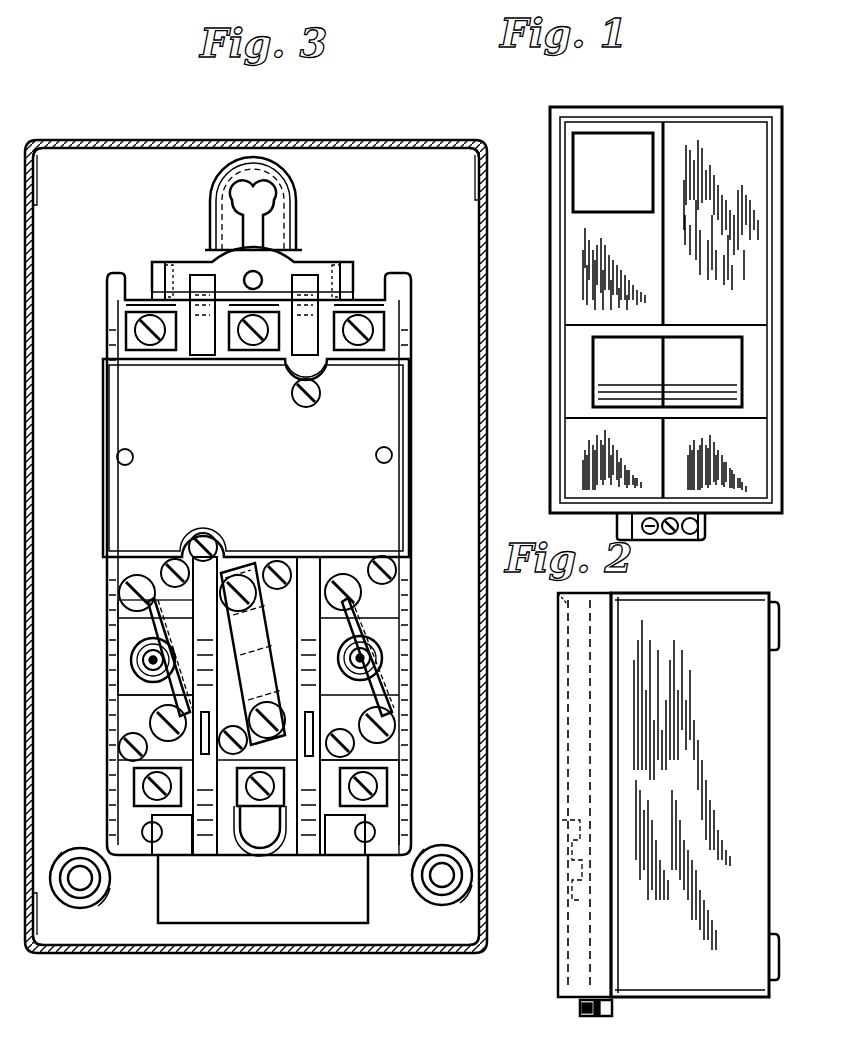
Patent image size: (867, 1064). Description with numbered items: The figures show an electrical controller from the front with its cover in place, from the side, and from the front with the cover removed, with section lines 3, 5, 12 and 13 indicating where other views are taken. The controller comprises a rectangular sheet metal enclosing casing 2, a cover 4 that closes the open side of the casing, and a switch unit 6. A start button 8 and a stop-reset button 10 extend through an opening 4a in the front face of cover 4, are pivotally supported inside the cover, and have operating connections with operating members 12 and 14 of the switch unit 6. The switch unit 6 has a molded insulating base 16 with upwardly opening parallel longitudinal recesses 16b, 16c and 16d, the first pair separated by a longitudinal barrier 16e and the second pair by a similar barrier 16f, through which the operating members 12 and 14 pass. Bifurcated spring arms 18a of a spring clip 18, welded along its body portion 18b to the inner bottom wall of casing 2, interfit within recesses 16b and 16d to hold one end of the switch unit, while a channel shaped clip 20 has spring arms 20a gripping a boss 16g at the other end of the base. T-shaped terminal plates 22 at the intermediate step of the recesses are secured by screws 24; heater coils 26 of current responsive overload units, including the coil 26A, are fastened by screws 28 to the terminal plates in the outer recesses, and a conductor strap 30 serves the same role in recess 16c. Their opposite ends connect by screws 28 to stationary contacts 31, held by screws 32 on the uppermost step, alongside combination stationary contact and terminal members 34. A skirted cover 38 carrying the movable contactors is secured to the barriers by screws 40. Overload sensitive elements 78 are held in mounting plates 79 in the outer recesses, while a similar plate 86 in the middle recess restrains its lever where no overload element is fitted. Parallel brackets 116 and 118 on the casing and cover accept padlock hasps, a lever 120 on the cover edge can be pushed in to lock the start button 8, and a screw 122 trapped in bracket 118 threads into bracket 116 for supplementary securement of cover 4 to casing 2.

In FIG. 3, the enclosing casing 2 is at (432, 140).
In FIG. 1, the enclosing casing 2 is at (666, 310).
In FIG. 2, the enclosing casing 2 is at (728, 608).
In FIG. 2, the section line 3- 3 is at (650, 583).
In FIG. 3, the cover 4 is at (305, 180).
In FIG. 1, the cover 4 is at (708, 122).
In FIG. 2, the cover 4 is at (570, 675).
In FIG. 1, the opening 4a is at (597, 345).
In FIG. 3, the section line 5- 5 is at (210, 180).
In FIG. 3, the switch unit 6 is at (410, 405).
In FIG. 3, the start button 8 is at (342, 232).
In FIG. 1, the start button 8 is at (598, 378).
In FIG. 1, the stop-reset button 10 is at (710, 352).
In FIG. 2, the stop-reset button 10 is at (557, 878).
In FIG. 3, the operating member 12 is at (70, 430).
In FIG. 3, the heater coil / section line 13- 13 is at (100, 668).
In FIG. 3, the operating member 14 is at (313, 762).
In FIG. 3, the molded insulating base 16 is at (411, 572).
In FIG. 3, the longitudinal recess 16b is at (122, 630).
In FIG. 3, the longitudinal recess 16c is at (266, 896).
In FIG. 3, the longitudinal recess 16d is at (405, 790).
In FIG. 3, the longitudinal barrier 16e is at (206, 706).
In FIG. 3, the longitudinal barrier 16f is at (308, 706).
In FIG. 3, the boss 16g is at (326, 272).
In FIG. 3, the spring clip 18 is at (345, 908).
In FIG. 3, the bifurcated spring arms 18a is at (165, 835).
In FIG. 3, the body portion 18b is at (205, 923).
In FIG. 3, the channel shaped clip 20 is at (200, 262).
In FIG. 3, the spring arms 20a is at (153, 270).
In FIG. 3, the terminal plates 22 is at (128, 746).
In FIG. 3, the screws 24 is at (145, 762).
In FIG. 3, the heater coils 26 is at (150, 690).
In FIG. 3, the conductor strip 26A is at (365, 665).
In FIG. 3, the screws 28 is at (119, 592).
In FIG. 3, the conductor strap 30 is at (253, 654).
In FIG. 3, the stationary contacts 31 is at (133, 557).
In FIG. 3, the screws 32 is at (168, 557).
In FIG. 3, the combination stationary contacts and terminal members 34 is at (126, 357).
In FIG. 3, the skirted cover 38 is at (103, 395).
In FIG. 3, the screws 40 is at (312, 398).
In FIG. 3, the overload sensitive elements 78 is at (140, 657).
In FIG. 3, the mounting plates 79 is at (130, 640).
In FIG. 3, the plate 86 is at (286, 632).
In FIG. 2, the bracket 116 is at (600, 1018).
In FIG. 1, the bracket 118 is at (705, 525).
In FIG. 2, the bracket 118 is at (590, 1018).
In FIG. 1, the lever 120 is at (628, 527).
In FIG. 1, the screw 122 is at (678, 530).
In FIG. 2, the screw 122 is at (582, 1008).